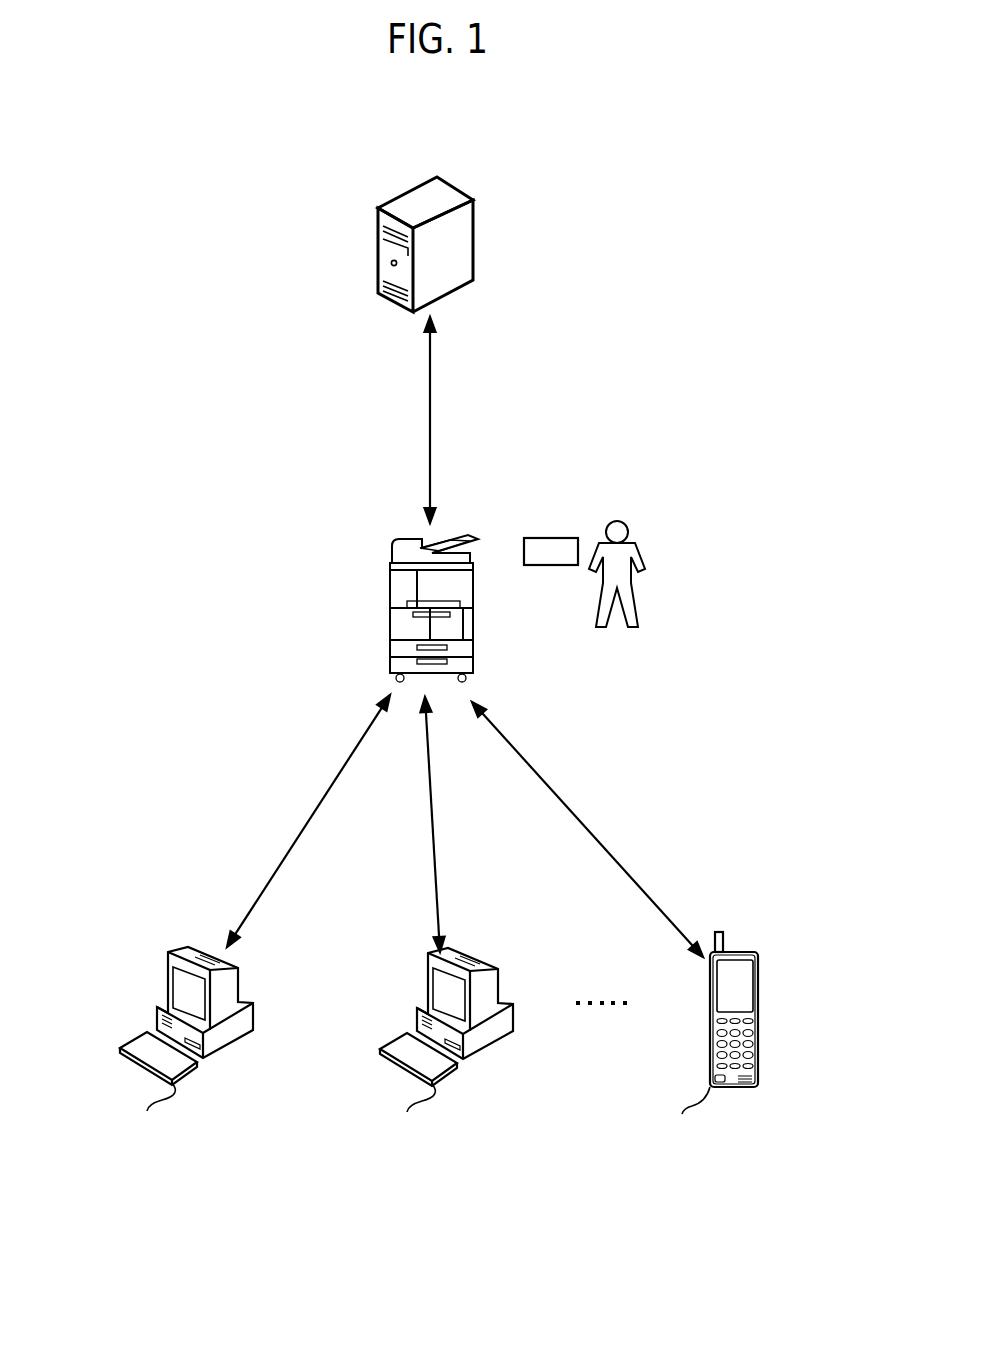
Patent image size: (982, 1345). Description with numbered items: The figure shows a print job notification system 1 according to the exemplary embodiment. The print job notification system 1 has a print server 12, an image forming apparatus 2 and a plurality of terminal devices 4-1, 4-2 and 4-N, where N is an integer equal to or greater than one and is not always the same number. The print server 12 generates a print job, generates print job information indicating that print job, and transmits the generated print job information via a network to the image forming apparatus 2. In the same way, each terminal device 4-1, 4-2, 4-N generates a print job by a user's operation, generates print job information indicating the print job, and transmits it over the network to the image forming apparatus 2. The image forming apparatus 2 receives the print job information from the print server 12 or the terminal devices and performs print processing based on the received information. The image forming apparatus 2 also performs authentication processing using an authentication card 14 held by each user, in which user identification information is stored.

The print job notification system 1 is at (642, 1299).
The image forming apparatus 2 is at (392, 560).
The terminal device 4-1 is at (158, 1062).
The terminal device 4-2 is at (438, 1062).
The terminal device 4-N is at (733, 1055).
The print server 12 is at (472, 198).
The authentication card 14 is at (548, 548).